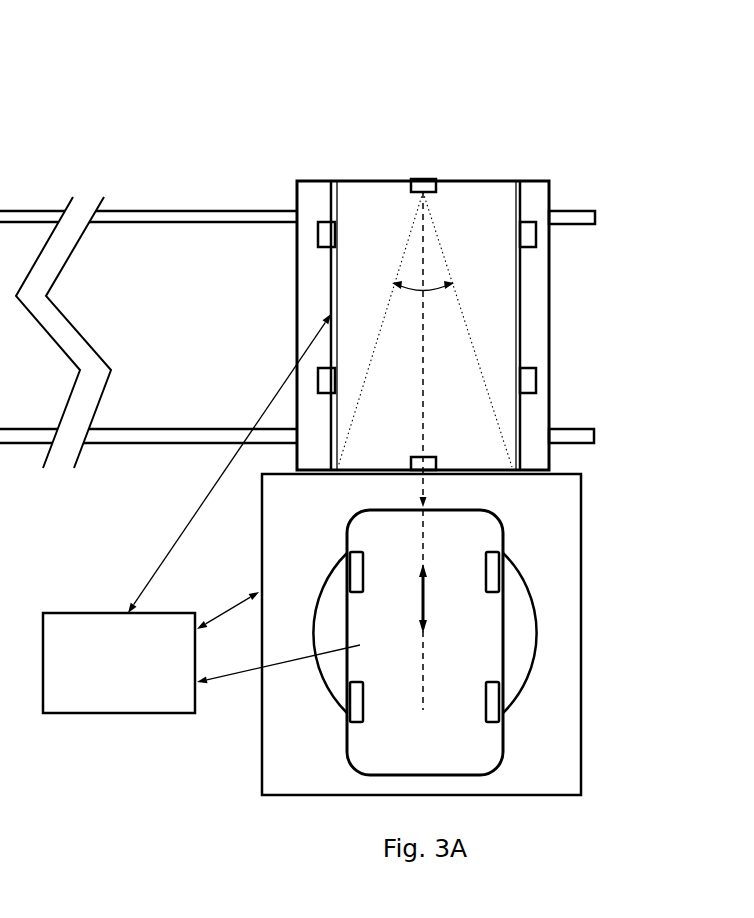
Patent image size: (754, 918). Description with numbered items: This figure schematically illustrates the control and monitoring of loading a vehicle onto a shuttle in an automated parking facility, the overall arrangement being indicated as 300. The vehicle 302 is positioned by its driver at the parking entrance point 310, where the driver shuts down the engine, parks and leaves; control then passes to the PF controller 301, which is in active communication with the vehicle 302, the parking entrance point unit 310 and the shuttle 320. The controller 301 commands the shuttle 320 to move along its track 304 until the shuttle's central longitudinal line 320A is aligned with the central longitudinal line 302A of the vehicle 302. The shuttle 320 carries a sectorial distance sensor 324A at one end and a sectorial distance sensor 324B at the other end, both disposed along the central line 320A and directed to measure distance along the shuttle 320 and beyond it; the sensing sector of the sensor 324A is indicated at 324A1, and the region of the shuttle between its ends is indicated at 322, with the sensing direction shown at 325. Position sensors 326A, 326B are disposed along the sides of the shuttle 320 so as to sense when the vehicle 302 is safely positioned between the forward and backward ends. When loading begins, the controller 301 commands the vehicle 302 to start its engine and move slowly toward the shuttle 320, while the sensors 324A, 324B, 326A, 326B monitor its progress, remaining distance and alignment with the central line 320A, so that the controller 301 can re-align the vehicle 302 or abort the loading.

The vehicle inspection system 300 is at (182, 82).
The PF controller 301 is at (201, 513).
The vehicle 302 is at (424, 642).
The central longitudinal line of vehicle 302A is at (428, 677).
The track 304 is at (228, 232).
The parking entrance point 310 is at (581, 646).
The shuttle 320 is at (632, 332).
The central longitudinal line of shuttle 320A is at (427, 263).
The scan region 322 is at (458, 397).
The sectorial distance sensor 324A is at (422, 178).
The sensor sweep range 324A1 is at (415, 285).
The sectorial distance sensor 324B is at (436, 465).
The central axis 325 is at (424, 395).
The position sensor 326A is at (536, 235).
The position sensor 326B is at (536, 375).